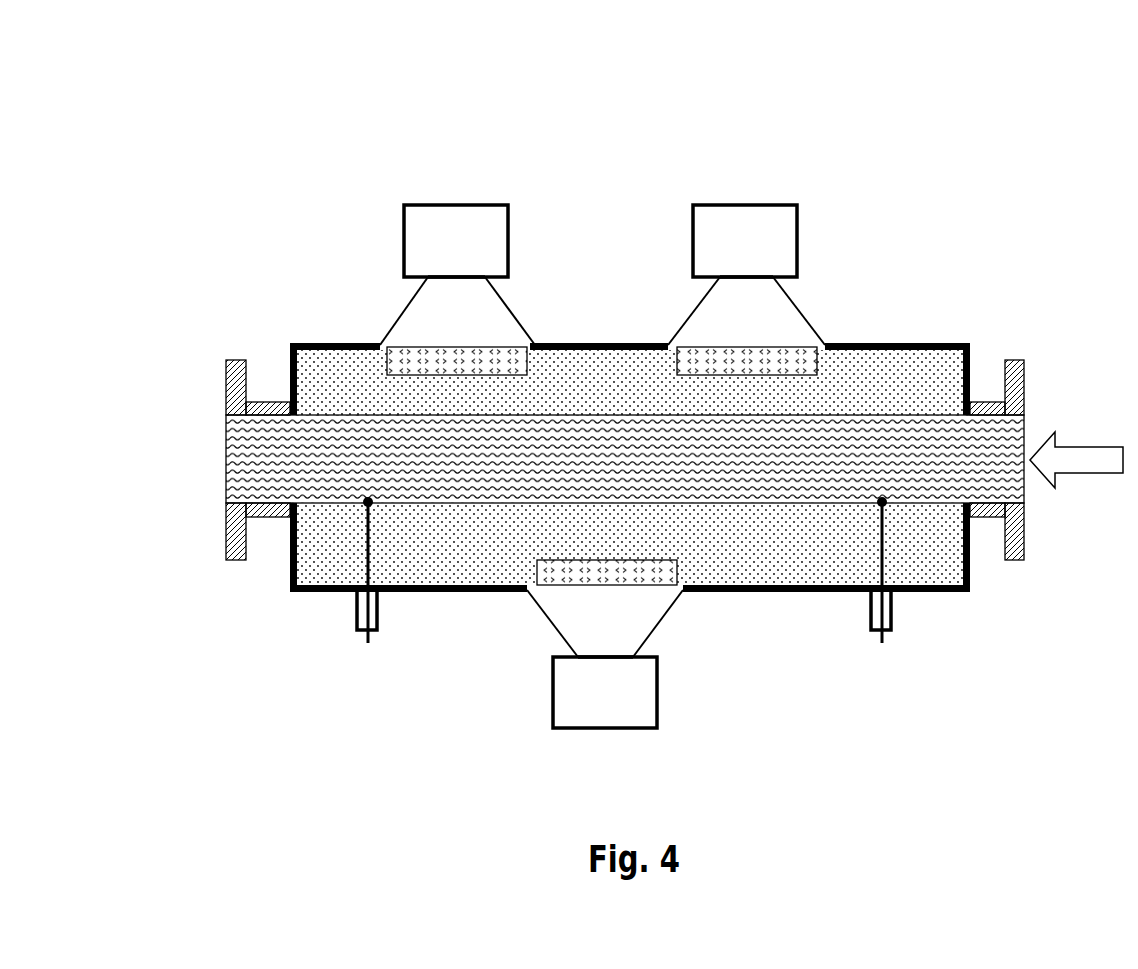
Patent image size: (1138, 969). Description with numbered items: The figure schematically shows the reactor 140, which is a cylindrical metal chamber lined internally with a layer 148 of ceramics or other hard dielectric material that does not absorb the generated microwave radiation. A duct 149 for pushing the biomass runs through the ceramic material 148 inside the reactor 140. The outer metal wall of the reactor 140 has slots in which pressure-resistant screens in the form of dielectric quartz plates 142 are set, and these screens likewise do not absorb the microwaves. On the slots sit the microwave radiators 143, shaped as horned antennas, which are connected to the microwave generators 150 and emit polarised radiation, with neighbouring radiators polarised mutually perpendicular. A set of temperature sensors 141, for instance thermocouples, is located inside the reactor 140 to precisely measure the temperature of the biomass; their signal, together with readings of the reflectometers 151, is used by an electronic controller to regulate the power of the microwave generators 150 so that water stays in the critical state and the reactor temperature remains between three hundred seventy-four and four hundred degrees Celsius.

The reactor 140 is at (240, 145).
The temperature sensors 141 is at (360, 605).
The dielectric quartz plates 142 is at (407, 360).
The microwave radiators 143 is at (430, 323).
The layer of ceramics or other hard dielectric material 148 is at (320, 400).
The duct 149 is at (305, 460).
The microwave generators 150 is at (422, 218).
The reflectometers 151 is at (458, 275).